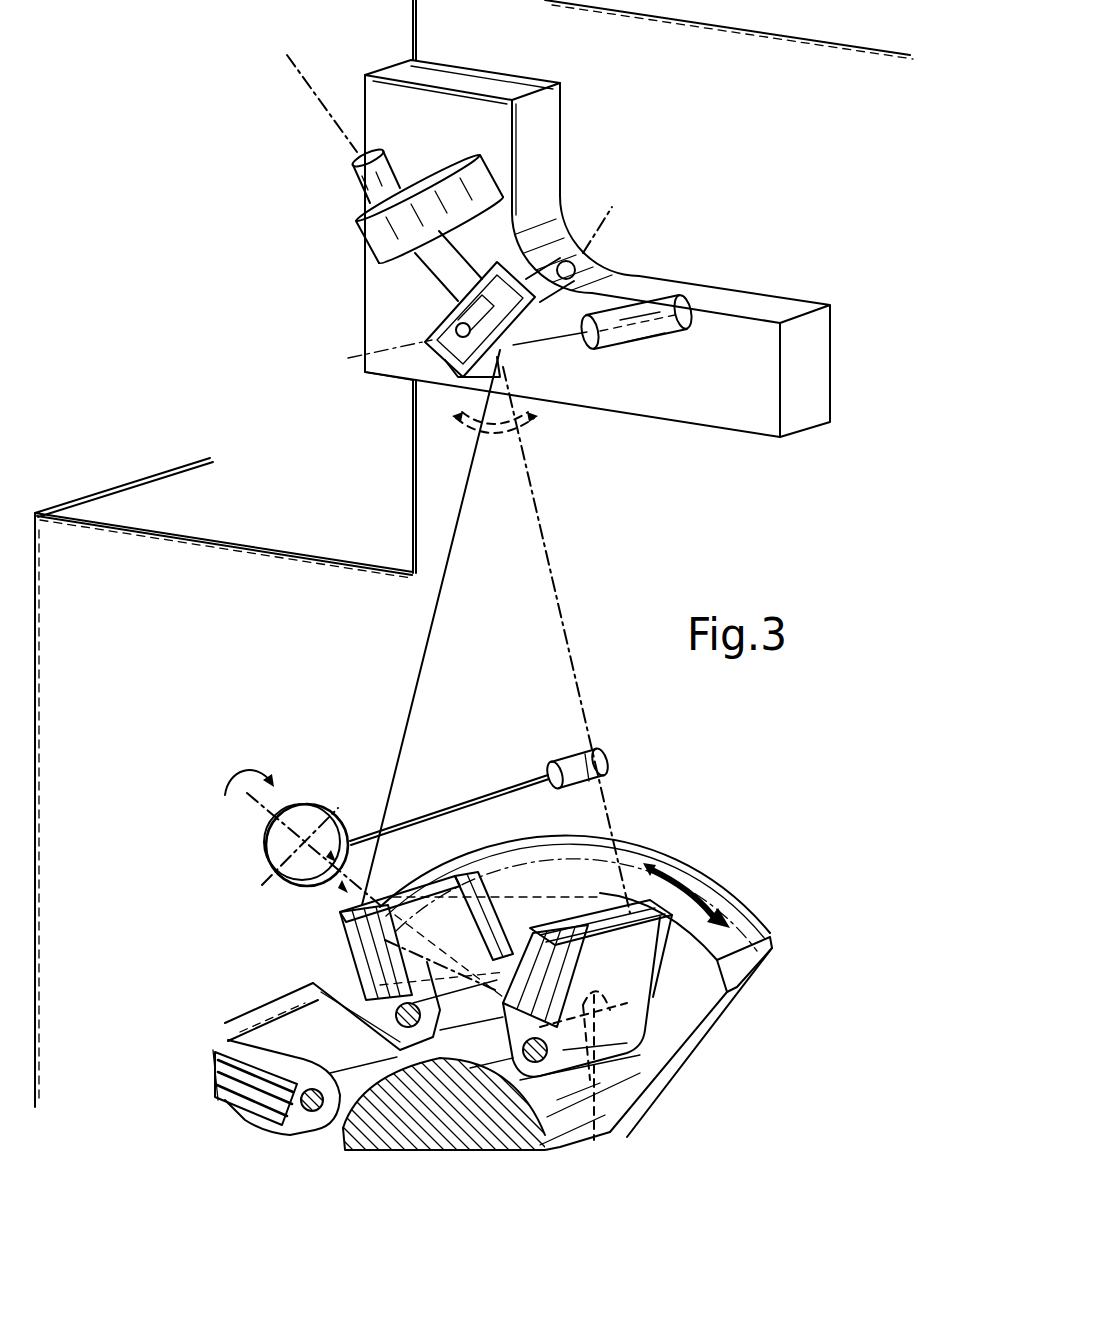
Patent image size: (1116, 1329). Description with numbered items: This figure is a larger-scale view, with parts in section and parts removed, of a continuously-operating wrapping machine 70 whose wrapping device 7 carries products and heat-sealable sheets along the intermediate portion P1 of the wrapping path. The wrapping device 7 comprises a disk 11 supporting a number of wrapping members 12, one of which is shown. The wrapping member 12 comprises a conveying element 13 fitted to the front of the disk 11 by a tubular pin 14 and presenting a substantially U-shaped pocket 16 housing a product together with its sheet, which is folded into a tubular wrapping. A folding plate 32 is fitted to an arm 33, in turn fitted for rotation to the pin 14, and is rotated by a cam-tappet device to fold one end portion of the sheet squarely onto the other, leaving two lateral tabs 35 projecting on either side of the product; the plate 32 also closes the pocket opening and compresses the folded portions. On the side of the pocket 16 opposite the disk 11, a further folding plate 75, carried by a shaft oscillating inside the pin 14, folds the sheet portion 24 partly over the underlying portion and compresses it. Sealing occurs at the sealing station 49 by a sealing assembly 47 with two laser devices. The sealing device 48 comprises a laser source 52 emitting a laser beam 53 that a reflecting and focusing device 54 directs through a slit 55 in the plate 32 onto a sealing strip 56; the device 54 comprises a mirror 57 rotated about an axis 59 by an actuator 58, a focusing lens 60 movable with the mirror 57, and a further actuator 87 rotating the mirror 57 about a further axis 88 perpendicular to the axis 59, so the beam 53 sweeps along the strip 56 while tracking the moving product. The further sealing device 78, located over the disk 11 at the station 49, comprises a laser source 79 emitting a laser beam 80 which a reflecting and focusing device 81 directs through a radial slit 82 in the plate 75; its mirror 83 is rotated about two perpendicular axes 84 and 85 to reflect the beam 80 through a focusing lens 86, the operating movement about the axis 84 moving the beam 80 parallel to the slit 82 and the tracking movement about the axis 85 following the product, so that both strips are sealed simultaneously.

The wrapping device 7 is at (735, 838).
The disk 11 is at (632, 857).
The wrapping member 12 is at (216, 1097).
The conveying element 13 is at (290, 1122).
The tubular pin 14 is at (312, 1118).
The pocket 16 is at (603, 1130).
The sheet portion 24 is at (700, 985).
The folding plate 32 is at (630, 995).
The arm 33 is at (690, 995).
The tabs 35 is at (678, 885).
The sealing assembly 47 is at (352, 282).
The sealing device 48 is at (524, 203).
The sealing station 49 is at (586, 618).
The laser source 52 is at (640, 302).
The laser beam 53 is at (428, 640).
The reflecting and focusing device 54 is at (435, 375).
The slit 55 is at (570, 920).
The sealing strip 56 is at (603, 917).
The mirror 57 is at (455, 290).
The actuator 58 is at (572, 283).
The axis 59 is at (605, 221).
The focusing lens 60 is at (533, 424).
The wrapping machine 70 is at (756, 236).
The folding plate 75 is at (368, 968).
The sealing device 78 is at (467, 743).
The laser source 79 is at (612, 755).
The laser beam 80 is at (497, 793).
The reflecting and focusing device 81 is at (270, 885).
The radial slit 82 is at (368, 965).
The mirror 83 is at (318, 808).
The axis 84 is at (343, 827).
The axis 85 is at (268, 806).
The focusing lens 86 is at (343, 897).
The further actuator 87 is at (450, 303).
The further axis 88 is at (320, 92).
The intermediate portion of wrapping path P1 is at (718, 898).